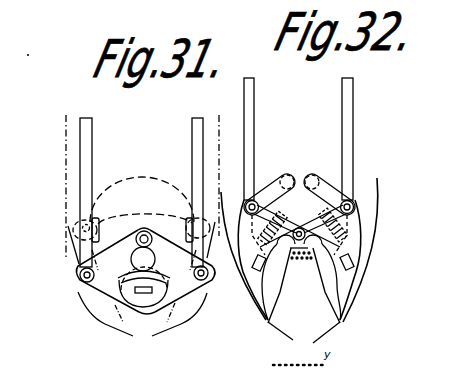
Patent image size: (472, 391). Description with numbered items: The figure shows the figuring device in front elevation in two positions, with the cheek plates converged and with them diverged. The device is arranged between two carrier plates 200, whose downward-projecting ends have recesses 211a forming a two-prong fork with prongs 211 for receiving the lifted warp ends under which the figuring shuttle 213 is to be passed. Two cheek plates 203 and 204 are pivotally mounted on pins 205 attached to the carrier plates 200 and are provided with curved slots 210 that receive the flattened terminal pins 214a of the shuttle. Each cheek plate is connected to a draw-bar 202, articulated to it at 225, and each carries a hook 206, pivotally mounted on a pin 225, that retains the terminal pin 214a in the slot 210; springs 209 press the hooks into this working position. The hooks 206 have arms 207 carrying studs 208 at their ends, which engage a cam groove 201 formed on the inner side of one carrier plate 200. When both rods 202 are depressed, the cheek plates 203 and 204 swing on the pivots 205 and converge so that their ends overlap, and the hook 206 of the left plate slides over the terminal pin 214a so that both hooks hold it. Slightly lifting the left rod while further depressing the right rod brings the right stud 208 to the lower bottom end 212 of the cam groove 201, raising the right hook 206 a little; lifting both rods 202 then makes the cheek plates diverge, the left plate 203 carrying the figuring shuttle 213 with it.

In FIG. 31, the carrier plate 200 is at (70, 145).
In FIG. 31, the cam groove 201 is at (135, 184).
In FIG. 31, the draw-bar 202 is at (89, 152).
In FIG. 32, the draw-bar 202 is at (251, 114).
In FIG. 31, the cheek plate 203 is at (93, 288).
In FIG. 32, the cheek plate 203 is at (242, 258).
In FIG. 31, the cheek plate 204 is at (183, 290).
In FIG. 32, the cheek plate 204 is at (353, 270).
In FIG. 31, the pin 205 is at (141, 236).
In FIG. 32, the pin 205 is at (301, 265).
In FIG. 32, the hook 206 is at (354, 222).
In FIG. 32, the arm 207 is at (318, 180).
In FIG. 31, the stud 208 is at (82, 226).
In FIG. 32, the stud 208 is at (288, 174).
In FIG. 32, the spring 209 is at (268, 190).
In FIG. 32, the curved slot 210 is at (262, 285).
In FIG. 31, the prong 211 is at (142, 297).
In FIG. 32, the prong 211 is at (304, 337).
In FIG. 31, the recess 211a is at (160, 316).
In FIG. 32, the recess 211a is at (285, 311).
In FIG. 31, the lower bottom end 212 is at (73, 239).
In FIG. 31, the figuring shuttle 213 is at (132, 303).
In FIG. 32, the figuring shuttle 213 is at (351, 279).
In FIG. 32, the terminal pin 214a is at (352, 262).
In FIG. 31, the pin 225 is at (79, 272).
In FIG. 32, the pin 225 is at (356, 200).